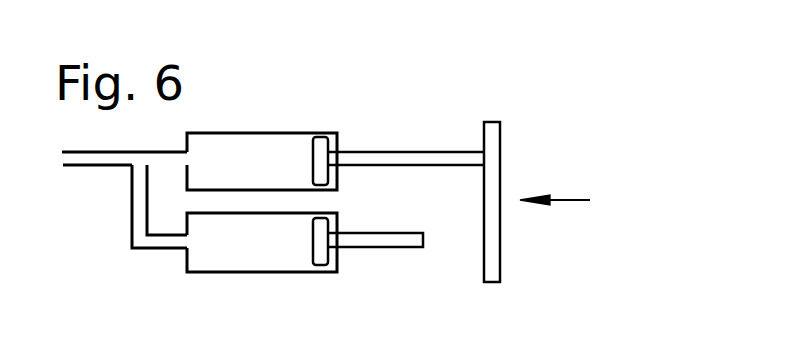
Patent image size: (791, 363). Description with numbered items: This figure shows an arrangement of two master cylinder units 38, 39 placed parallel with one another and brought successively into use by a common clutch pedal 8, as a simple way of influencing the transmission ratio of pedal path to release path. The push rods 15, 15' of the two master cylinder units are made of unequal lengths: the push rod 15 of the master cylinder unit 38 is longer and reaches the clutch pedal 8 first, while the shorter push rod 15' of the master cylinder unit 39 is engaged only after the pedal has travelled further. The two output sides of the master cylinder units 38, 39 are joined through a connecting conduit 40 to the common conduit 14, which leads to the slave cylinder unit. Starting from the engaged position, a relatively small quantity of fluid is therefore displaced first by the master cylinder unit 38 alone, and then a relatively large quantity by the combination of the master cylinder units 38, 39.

The common conduit 14 is at (95, 166).
The connecting conduit 40 is at (130, 228).
The master cylinder unit 38 is at (273, 132).
The master cylinder unit 39 is at (280, 273).
The push rod 15 is at (406, 125).
The push rod 15' is at (377, 270).
The clutch pedal 8 is at (500, 133).